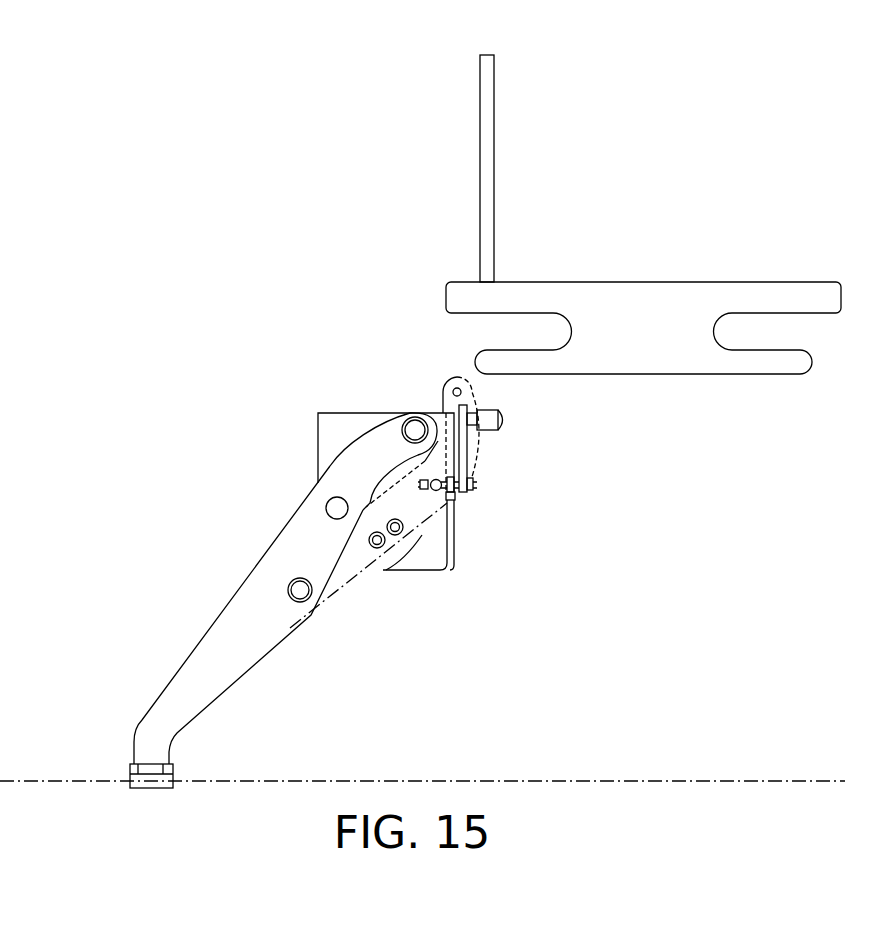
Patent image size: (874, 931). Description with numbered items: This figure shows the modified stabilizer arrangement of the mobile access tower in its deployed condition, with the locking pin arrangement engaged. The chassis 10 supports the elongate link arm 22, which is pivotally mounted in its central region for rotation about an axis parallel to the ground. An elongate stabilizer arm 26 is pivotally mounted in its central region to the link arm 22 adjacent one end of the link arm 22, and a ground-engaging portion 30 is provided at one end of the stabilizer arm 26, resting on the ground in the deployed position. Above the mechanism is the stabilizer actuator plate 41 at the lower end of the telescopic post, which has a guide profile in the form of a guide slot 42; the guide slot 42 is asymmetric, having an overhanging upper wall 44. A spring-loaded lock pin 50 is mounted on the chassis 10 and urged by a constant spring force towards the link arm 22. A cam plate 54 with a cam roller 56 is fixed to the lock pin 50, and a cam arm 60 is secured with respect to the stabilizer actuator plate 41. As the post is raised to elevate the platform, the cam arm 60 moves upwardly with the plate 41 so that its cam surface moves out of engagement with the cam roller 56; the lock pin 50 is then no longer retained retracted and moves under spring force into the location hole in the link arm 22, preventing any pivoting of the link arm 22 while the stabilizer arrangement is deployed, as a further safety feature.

The chassis 10 is at (430, 568).
The link arm 22 is at (345, 588).
The stabilizer arm 26 is at (204, 702).
The ground-engaging portion 30 is at (128, 775).
The stabilizer actuator plate 41 is at (648, 292).
The guide slot 42 is at (785, 347).
The overhanging upper wall 44 is at (814, 292).
The lock pin 50 is at (477, 485).
The cam plate 54 is at (468, 452).
The cam roller 56 is at (500, 404).
The cam arm 60 is at (494, 127).